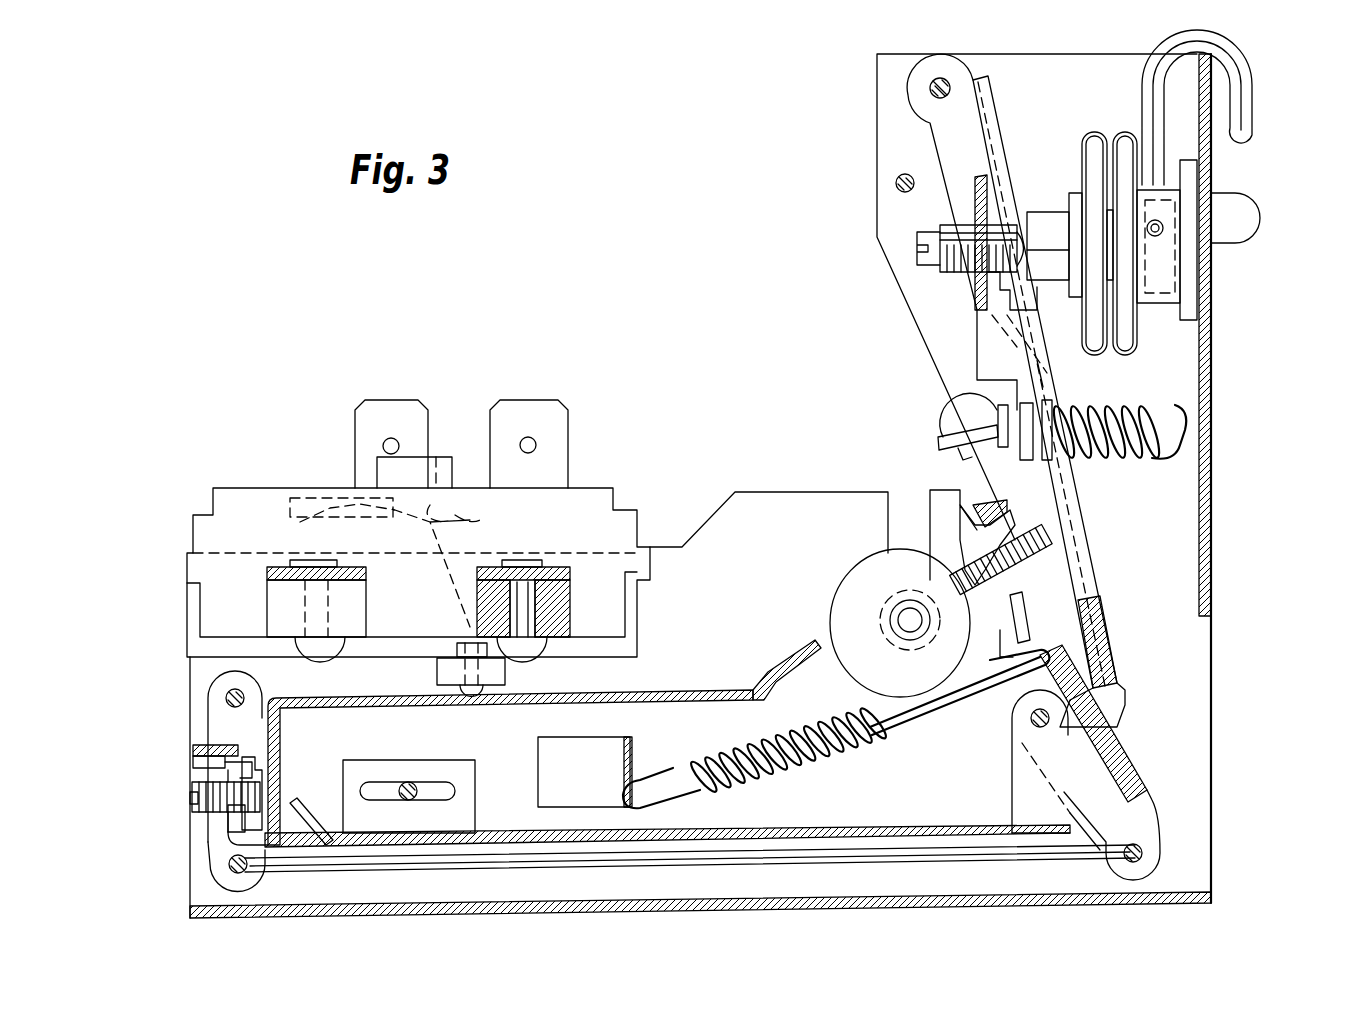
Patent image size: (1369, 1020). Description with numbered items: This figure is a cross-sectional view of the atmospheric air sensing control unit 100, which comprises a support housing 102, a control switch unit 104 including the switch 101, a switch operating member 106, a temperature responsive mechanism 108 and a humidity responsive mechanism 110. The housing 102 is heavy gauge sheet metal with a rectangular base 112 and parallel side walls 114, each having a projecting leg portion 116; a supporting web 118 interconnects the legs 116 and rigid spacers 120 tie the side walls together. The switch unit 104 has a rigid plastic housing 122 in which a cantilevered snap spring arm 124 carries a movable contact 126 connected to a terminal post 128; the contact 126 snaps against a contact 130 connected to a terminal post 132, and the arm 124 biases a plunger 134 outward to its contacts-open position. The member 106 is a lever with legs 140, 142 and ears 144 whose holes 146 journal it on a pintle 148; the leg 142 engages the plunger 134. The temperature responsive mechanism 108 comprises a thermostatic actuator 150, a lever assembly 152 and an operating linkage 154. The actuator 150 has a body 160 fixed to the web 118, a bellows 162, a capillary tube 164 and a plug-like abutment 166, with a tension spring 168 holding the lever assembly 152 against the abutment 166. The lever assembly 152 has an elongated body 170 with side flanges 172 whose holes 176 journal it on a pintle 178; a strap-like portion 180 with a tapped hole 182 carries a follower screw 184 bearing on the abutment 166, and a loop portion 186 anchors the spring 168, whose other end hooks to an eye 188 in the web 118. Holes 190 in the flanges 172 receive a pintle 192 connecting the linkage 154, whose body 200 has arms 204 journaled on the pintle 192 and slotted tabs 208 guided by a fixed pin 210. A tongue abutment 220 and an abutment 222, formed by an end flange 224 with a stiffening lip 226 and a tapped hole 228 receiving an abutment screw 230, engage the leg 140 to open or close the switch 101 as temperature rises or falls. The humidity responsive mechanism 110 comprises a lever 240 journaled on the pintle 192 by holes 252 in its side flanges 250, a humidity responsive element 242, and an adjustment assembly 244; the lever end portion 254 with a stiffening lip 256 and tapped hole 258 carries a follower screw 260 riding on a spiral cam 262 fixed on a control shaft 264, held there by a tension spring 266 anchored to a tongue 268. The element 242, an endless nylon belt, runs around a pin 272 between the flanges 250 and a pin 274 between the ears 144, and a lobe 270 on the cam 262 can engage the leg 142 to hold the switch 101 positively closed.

The atmospheric air sensing control unit 100 is at (651, 289).
The switch 101 is at (538, 516).
The support housing 102 is at (815, 478).
The control switch unit 104 is at (275, 470).
The switch operating member 106 is at (196, 704).
The temperature responsive mechanism 108 is at (1211, 397).
The humidity responsive mechanism 110 is at (1192, 800).
The base 112 is at (885, 903).
The side walls 114 is at (732, 610).
The projecting leg portion 116 is at (880, 232).
The supporting web 118 is at (1212, 566).
The rigid spacers 120 is at (900, 178).
The rigid plastic housing 122 is at (612, 500).
The snap spring arm 124 is at (310, 522).
The movable contact 126 is at (480, 533).
The terminal post 128 is at (365, 412).
The contact 130 is at (425, 504).
The terminal post 132 is at (545, 410).
The switch operating plunger member 134 is at (490, 685).
The leg 140 is at (278, 748).
The leg 142 is at (648, 692).
The ears 144 is at (225, 735).
The aligned holes 146 is at (228, 690).
The pintle 148 is at (245, 690).
The thermostatic actuator arrangement 150 is at (1190, 358).
The lever assembly 152 is at (1125, 645).
The operating linkage 154 is at (870, 825).
The body 160 is at (1165, 260).
The bellows 162 is at (1090, 150).
The capillary tube 164 is at (1255, 80).
The plug-like abutment 166 is at (1045, 215).
The tension spring 168 is at (1105, 455).
The elongated body 170 is at (1100, 535).
The side flanges 172 is at (962, 208).
The aligned holes 176 is at (932, 92).
The pintle 178 is at (935, 84).
The strap-like portion 180 is at (993, 355).
The tapped hole 182 is at (975, 295).
The follower screw 184 is at (915, 270).
The loop portion 186 is at (942, 430).
The sheet metal eye 188 is at (1195, 452).
The aligned holes 190 is at (1050, 740).
The pintle 192 is at (1035, 722).
The elongated body 200 is at (692, 828).
The parallel arms 204 is at (1012, 795).
The slotted tabs 208 is at (445, 760).
The fixed cylindrical pin 210 is at (410, 782).
The abutment 220 is at (300, 802).
The abutment 222 is at (192, 793).
The end flange 224 is at (232, 840).
The stiffening lip 226 is at (200, 752).
The tapped hole 228 is at (235, 820).
The abutment screw 230 is at (195, 805).
The lever 240 is at (1122, 760).
The humidity responsive element 242 is at (848, 868).
The moisture level response adjustment assembly 244 is at (862, 575).
The side flanges 250 is at (1140, 820).
The aligned holes 252 is at (1022, 745).
The body end portion 254 is at (958, 505).
The stiffening lip 256 is at (990, 490).
The tapped hole 258 is at (962, 540).
The follower screw 260 is at (1028, 602).
The cam member 262 is at (935, 666).
The control shaft 264 is at (895, 617).
The tension spring 266 is at (757, 738).
The spring supporting tongue 268 is at (625, 760).
The lobe 270 is at (850, 672).
The smooth cylindrical pin 272 is at (1150, 858).
The smooth cylindrical pin 274 is at (255, 878).